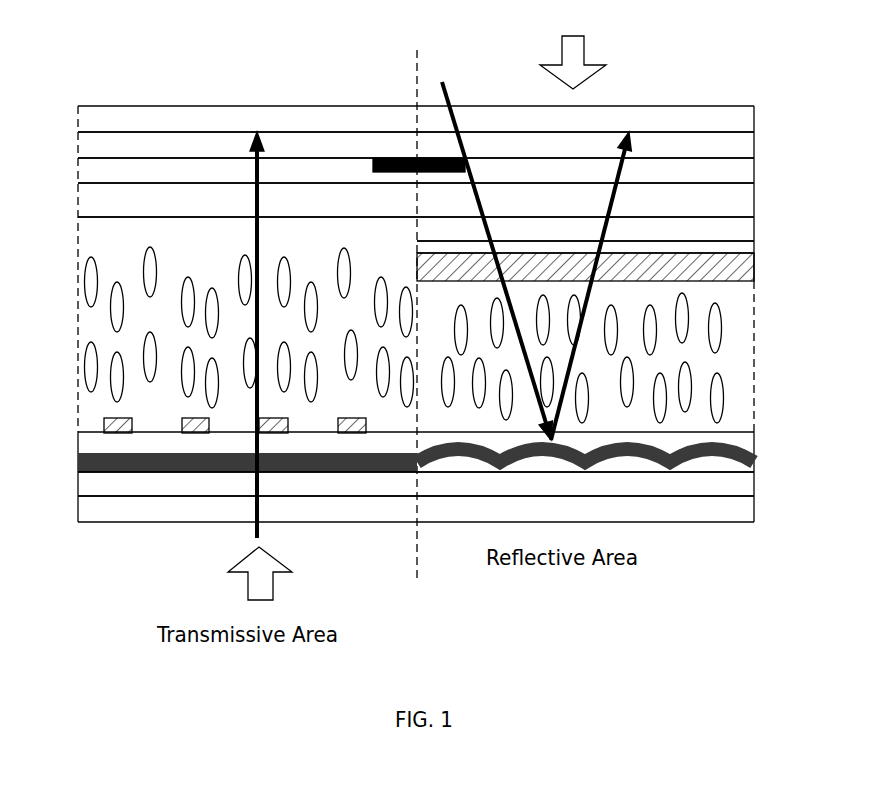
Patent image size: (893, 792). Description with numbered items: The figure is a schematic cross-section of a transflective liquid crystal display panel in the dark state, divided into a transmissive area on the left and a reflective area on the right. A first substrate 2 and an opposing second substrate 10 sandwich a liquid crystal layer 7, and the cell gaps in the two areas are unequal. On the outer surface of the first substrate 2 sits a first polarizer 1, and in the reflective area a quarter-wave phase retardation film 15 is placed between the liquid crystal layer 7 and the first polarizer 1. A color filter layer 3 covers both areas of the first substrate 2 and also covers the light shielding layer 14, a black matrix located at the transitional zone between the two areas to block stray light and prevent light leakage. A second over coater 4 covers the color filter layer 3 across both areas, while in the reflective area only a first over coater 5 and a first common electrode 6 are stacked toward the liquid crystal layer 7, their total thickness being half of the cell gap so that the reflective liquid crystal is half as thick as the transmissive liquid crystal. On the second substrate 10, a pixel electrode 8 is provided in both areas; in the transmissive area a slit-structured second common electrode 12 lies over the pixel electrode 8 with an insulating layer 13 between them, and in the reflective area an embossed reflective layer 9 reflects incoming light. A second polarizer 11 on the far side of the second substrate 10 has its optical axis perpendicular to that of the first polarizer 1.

The first polarizer 1 is at (745, 117).
The first substrate 2 is at (745, 142).
The color filter layer 3 is at (745, 170).
The second over coater 4 is at (750, 197).
The first over coater 5 is at (750, 228).
The λ/4 phase retardation film 15 is at (730, 250).
The first common electrode 6 is at (740, 272).
The liquid crystal layer 7 is at (722, 308).
The pixel electrode 8 is at (758, 443).
The reflective layer 9 is at (735, 463).
The second substrate 10 is at (740, 489).
The second polarizer 11 is at (740, 510).
The second common electrode 12 is at (103, 425).
The insulating layer 13 is at (104, 445).
The light shielding layer 14 is at (395, 158).